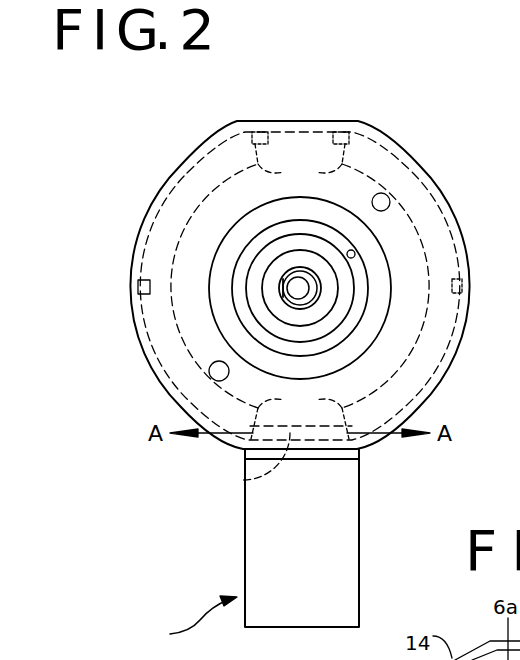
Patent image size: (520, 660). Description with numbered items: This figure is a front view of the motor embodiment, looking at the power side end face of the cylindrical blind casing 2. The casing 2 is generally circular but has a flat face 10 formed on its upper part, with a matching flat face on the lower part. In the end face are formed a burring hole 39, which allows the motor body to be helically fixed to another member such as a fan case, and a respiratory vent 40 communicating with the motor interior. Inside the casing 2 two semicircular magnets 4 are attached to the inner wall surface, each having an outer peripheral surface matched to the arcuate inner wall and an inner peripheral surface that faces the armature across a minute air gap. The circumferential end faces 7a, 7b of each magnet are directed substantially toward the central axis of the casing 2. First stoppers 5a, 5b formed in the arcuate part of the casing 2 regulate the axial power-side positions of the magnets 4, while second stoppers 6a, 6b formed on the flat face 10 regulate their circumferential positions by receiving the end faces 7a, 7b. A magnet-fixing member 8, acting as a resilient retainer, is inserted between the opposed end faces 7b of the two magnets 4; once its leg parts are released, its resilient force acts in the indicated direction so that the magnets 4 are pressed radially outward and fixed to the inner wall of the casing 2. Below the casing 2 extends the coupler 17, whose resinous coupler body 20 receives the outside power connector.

The casing 2 is at (417, 155).
The magnets 4 is at (157, 332).
The first stopper 5a is at (138, 285).
The first stopper 5b is at (463, 286).
The second stopper 6a is at (340, 131).
The second stopper 6b is at (260, 132).
The end face 7a is at (300, 173).
The end face 7b is at (301, 413).
The magnet-fixing member 8 is at (243, 481).
The flat face 10 is at (298, 120).
The coupler 17 is at (190, 624).
The coupler body 20 is at (348, 574).
The burring hole 39 is at (390, 203).
The respiratory vent 40 is at (355, 254).